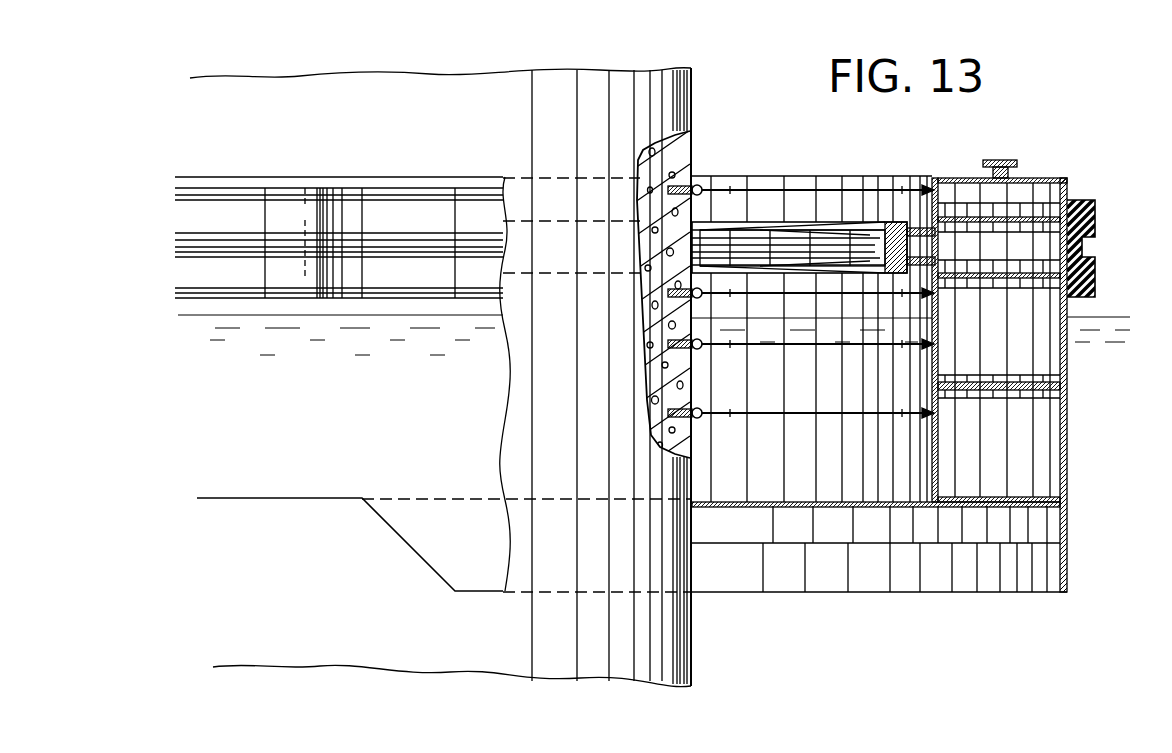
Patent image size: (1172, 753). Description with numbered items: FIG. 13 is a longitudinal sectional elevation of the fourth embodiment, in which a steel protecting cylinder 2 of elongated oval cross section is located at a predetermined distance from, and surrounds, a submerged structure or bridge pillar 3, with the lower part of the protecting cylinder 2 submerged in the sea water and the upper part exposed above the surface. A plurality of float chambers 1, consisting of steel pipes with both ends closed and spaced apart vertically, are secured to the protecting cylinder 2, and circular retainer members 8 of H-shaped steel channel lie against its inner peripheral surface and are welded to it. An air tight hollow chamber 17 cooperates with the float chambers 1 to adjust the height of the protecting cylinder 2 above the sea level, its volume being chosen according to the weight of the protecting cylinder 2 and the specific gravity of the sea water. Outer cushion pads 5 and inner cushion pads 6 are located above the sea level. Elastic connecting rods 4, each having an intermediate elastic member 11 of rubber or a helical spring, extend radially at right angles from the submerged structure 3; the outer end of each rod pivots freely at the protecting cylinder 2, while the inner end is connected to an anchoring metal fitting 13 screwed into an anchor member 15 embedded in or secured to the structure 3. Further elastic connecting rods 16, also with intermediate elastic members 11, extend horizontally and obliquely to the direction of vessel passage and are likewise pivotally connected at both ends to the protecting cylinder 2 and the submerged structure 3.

The float chambers 1 is at (1045, 425).
The protecting cylinder 2 is at (327, 473).
The submerged structure or bridge pillar 3 is at (663, 97).
The elastic connecting rods 4 is at (771, 188).
The outer cushion pads 5 is at (1096, 242).
The inner cushion pads 6 is at (888, 222).
The retainer members 8 is at (912, 228).
The intermediate elastic member 11 is at (770, 420).
The anchoring metal fitting 13 is at (701, 351).
The anchor member 15 is at (692, 166).
The obliquely extending elastic connecting rods 16 is at (788, 348).
The air tight hollow chamber 17 is at (1010, 160).